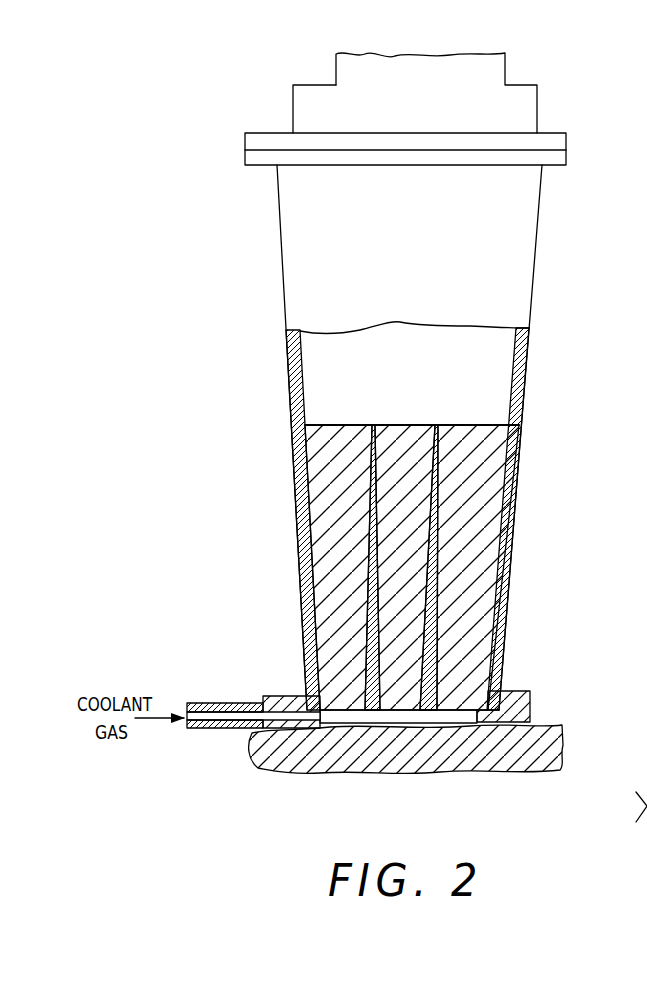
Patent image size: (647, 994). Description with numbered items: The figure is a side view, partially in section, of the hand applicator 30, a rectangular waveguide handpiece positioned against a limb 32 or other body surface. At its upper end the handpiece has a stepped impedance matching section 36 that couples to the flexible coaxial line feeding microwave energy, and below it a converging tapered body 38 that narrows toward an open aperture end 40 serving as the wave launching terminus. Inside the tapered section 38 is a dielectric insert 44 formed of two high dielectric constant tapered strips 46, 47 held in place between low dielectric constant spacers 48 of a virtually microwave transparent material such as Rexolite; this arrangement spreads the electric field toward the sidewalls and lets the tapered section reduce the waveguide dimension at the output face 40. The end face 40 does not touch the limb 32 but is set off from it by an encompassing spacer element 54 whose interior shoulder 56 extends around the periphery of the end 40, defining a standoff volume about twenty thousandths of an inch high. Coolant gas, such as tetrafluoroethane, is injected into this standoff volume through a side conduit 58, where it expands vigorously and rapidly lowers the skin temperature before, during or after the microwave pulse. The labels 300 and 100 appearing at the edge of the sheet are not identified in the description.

The hand applicator 30 is at (250, 313).
The limb 32 is at (270, 760).
The impedance matching section 36 is at (538, 100).
The converging tapered body 38 is at (525, 378).
The open aperture end 40 is at (450, 715).
The dielectric insert 44 is at (408, 418).
The tapered strip 46 is at (367, 543).
The tapered strip 47 is at (437, 575).
The spacer 48 is at (478, 478).
The spacer element 54 is at (533, 695).
The interior shoulder 56 is at (496, 695).
The side conduit 58 is at (295, 715).
The label 300 is at (628, 570).
The label 100 is at (629, 780).